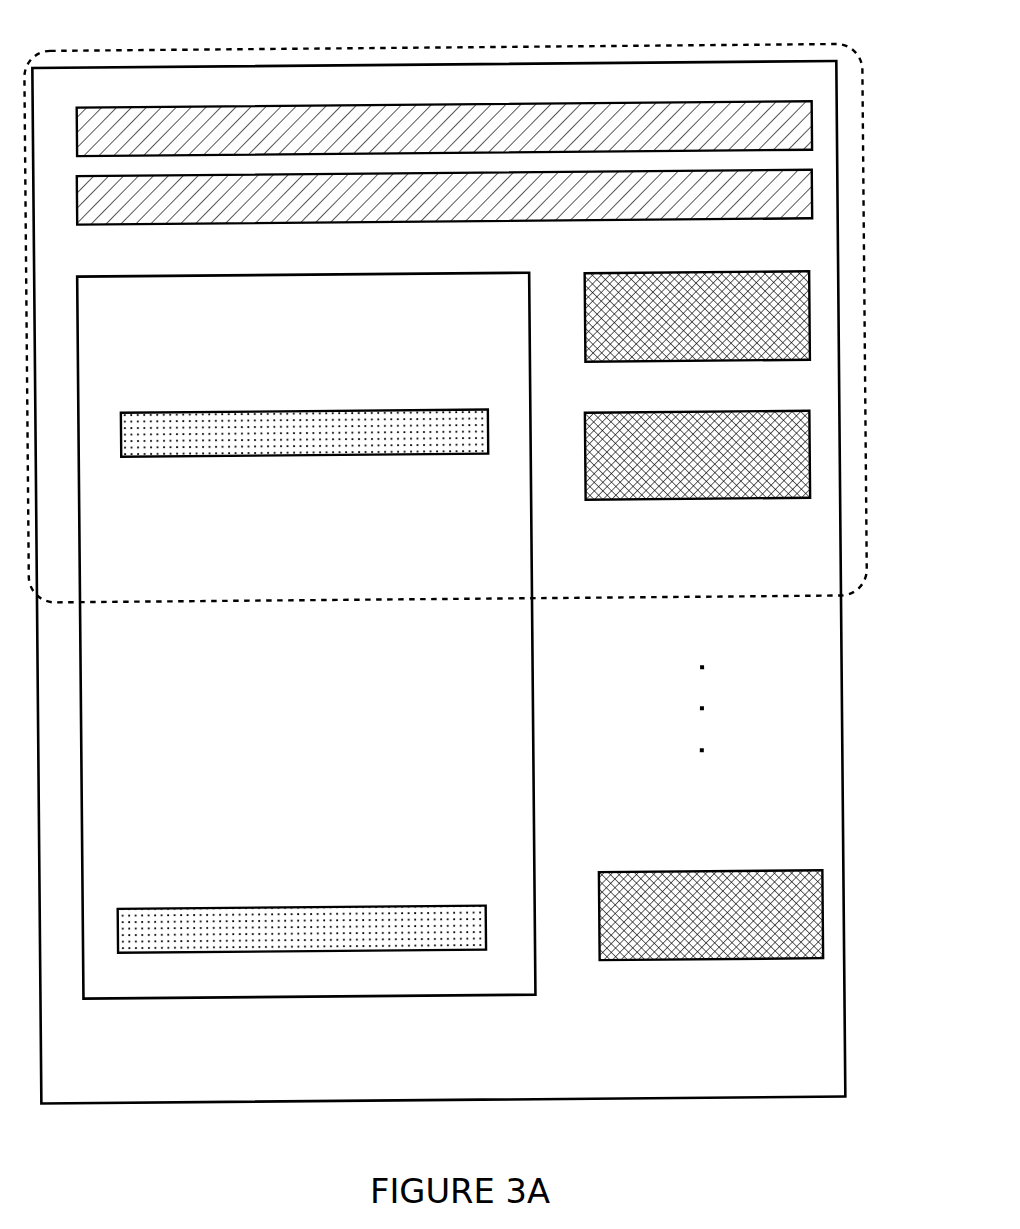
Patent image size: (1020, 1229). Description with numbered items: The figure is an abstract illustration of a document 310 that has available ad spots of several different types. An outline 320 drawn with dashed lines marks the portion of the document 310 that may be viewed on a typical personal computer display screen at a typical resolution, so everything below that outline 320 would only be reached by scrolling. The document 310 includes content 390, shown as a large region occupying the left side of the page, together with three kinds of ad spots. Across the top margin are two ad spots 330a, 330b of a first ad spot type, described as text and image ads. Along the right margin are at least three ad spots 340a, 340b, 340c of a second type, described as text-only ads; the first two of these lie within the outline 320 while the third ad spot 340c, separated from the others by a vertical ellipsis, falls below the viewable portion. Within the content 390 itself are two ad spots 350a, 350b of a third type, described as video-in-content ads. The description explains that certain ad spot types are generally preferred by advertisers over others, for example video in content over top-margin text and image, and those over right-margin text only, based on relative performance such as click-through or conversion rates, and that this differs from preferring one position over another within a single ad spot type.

The document 310 is at (445, 1101).
The outline 320 is at (790, 597).
The ad spot of first type 330a is at (441, 106).
The ad spot of first type 330b is at (441, 223).
The ad spot of second type 340a is at (700, 274).
The ad spot of second type 340b is at (703, 414).
The ad spot of second type 340c is at (713, 874).
The ad spot of third type 350a is at (304, 410).
The ad spot of third type 350b is at (299, 906).
The content 390 is at (533, 738).